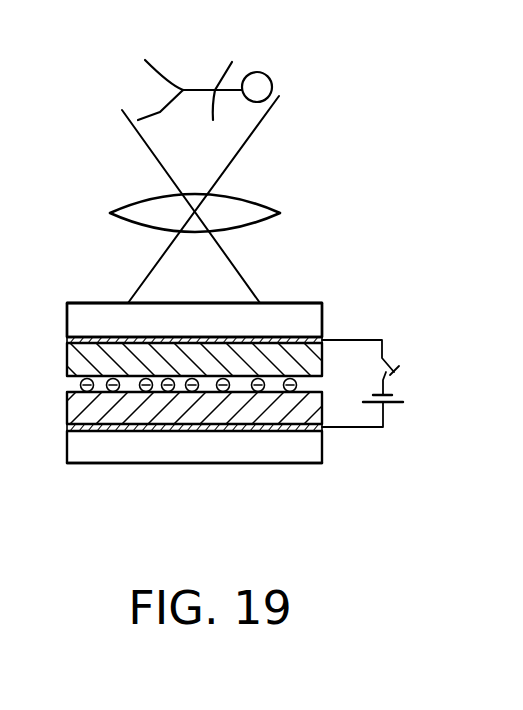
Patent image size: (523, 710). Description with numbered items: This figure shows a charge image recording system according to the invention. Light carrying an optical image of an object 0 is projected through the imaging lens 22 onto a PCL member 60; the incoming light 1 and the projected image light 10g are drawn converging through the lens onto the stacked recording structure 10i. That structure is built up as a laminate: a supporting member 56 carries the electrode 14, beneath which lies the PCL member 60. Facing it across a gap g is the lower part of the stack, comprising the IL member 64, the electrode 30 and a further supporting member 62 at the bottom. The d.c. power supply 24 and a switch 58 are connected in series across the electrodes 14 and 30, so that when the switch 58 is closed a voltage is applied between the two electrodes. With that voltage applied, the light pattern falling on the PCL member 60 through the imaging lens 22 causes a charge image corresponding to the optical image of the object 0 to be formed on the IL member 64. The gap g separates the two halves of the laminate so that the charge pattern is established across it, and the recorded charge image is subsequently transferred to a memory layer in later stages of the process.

The object being viewed 0 is at (273, 83).
The imaging lens 22 is at (257, 203).
The incident light 1 is at (113, 303).
The light rays / image 10g is at (163, 303).
The supporting member 56 is at (287, 303).
The electrode 14 is at (63, 337).
The PCL member 60 is at (78, 361).
The gap g is at (308, 385).
The IL member 64 is at (80, 415).
The electrode 30 is at (68, 432).
The lower substrate 62 is at (313, 450).
The switch 58 is at (398, 362).
The d.c. power supply 24 is at (393, 408).
The optical device 10i is at (148, 472).